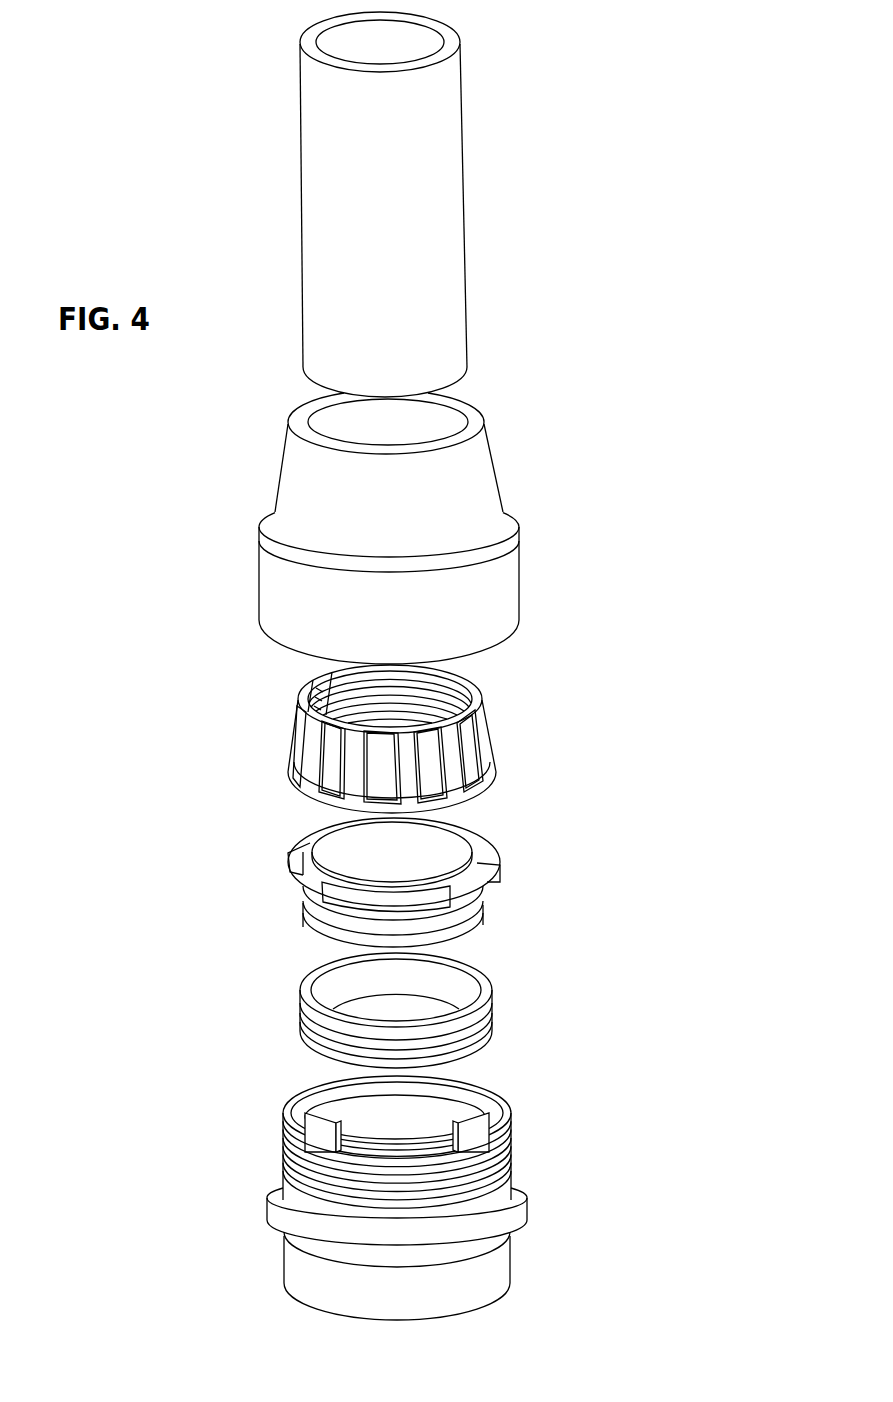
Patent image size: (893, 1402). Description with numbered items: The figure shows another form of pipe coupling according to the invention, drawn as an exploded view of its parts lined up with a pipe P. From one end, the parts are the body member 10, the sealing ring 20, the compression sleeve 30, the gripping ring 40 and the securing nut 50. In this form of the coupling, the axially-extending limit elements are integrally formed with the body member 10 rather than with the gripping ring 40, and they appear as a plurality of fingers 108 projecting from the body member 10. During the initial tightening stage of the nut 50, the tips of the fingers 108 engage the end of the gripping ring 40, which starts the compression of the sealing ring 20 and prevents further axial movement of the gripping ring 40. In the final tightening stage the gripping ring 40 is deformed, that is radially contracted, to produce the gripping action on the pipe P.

The pipe P is at (443, 203).
The securing nut 50 is at (522, 546).
The gripping ring 40 is at (499, 732).
The compression sleeve 30 is at (494, 910).
The sealing ring 20 is at (502, 1001).
The body member 10 is at (409, 1195).
The fingers 108 is at (318, 1130).